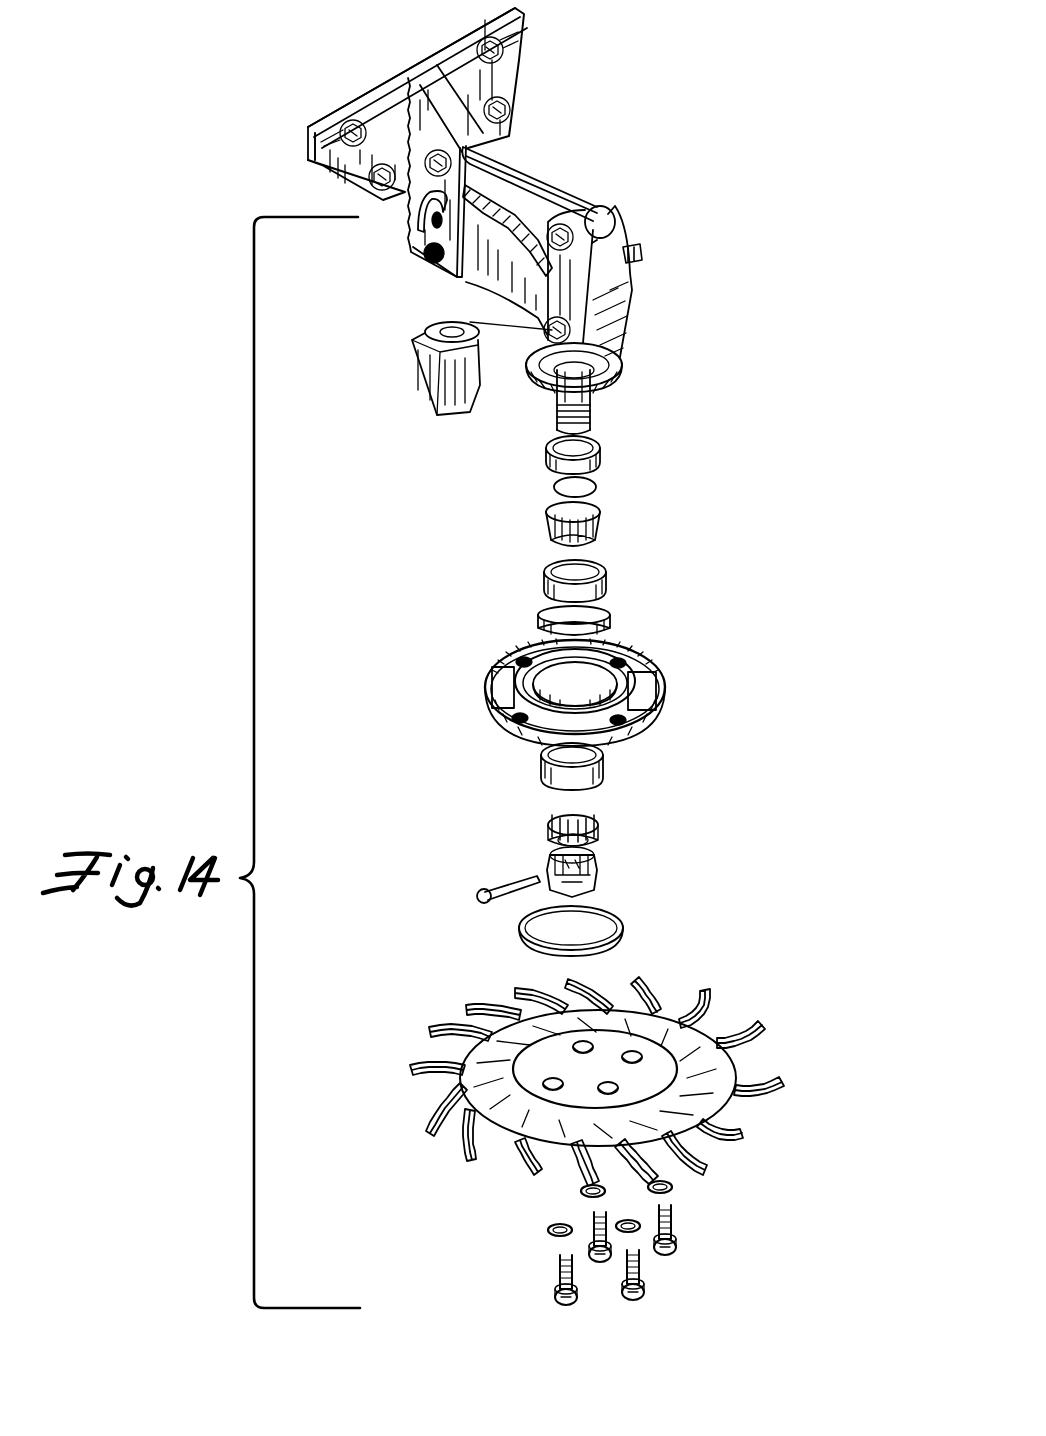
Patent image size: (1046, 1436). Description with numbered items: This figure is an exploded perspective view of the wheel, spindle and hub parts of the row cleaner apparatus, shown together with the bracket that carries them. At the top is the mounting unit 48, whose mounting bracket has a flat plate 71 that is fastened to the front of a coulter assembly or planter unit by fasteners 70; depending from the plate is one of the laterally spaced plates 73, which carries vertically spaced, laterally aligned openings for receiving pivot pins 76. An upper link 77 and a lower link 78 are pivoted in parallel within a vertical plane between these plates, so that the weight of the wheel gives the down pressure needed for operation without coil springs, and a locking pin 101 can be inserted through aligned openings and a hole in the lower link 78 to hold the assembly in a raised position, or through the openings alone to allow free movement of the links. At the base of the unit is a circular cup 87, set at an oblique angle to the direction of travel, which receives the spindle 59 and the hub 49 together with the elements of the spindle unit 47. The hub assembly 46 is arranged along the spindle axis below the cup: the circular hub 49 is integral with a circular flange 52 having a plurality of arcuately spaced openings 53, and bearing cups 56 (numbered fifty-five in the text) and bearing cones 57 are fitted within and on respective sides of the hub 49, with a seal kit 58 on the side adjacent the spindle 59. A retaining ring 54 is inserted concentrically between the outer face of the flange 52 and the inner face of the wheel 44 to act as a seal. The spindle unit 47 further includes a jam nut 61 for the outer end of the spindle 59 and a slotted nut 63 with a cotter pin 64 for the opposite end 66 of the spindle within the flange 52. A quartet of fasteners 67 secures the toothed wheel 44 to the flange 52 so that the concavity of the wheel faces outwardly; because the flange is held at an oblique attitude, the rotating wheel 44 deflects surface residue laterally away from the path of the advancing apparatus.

The toothed wheel 44 is at (597, 1095).
The hub assembly 46 is at (458, 661).
The spindle unit 47 is at (540, 398).
The mounting unit 48 is at (626, 240).
The hub 49 is at (552, 615).
The circular flange 52 is at (497, 712).
The openings 53 is at (625, 665).
The retaining ring 54 is at (622, 926).
The bearing cup 56 is at (606, 573).
The bearing cones 57 is at (605, 522).
The seal kit 58 is at (600, 487).
The spindle 59 is at (592, 395).
The jam nut 61 is at (410, 334).
The slotted nut 63 is at (596, 868).
The cotter pin 64 is at (503, 875).
The opposite end of the spindle 66 is at (556, 422).
The fasteners 67 is at (673, 1222).
The fasteners 70 is at (368, 108).
The flat plate 71 is at (368, 94).
The plate 73 is at (420, 266).
The pivot pins 76 is at (450, 276).
The upper link 77 is at (543, 190).
The lower link 78 is at (536, 272).
The circular cup 87 is at (615, 372).
The locking pin 101 is at (407, 224).